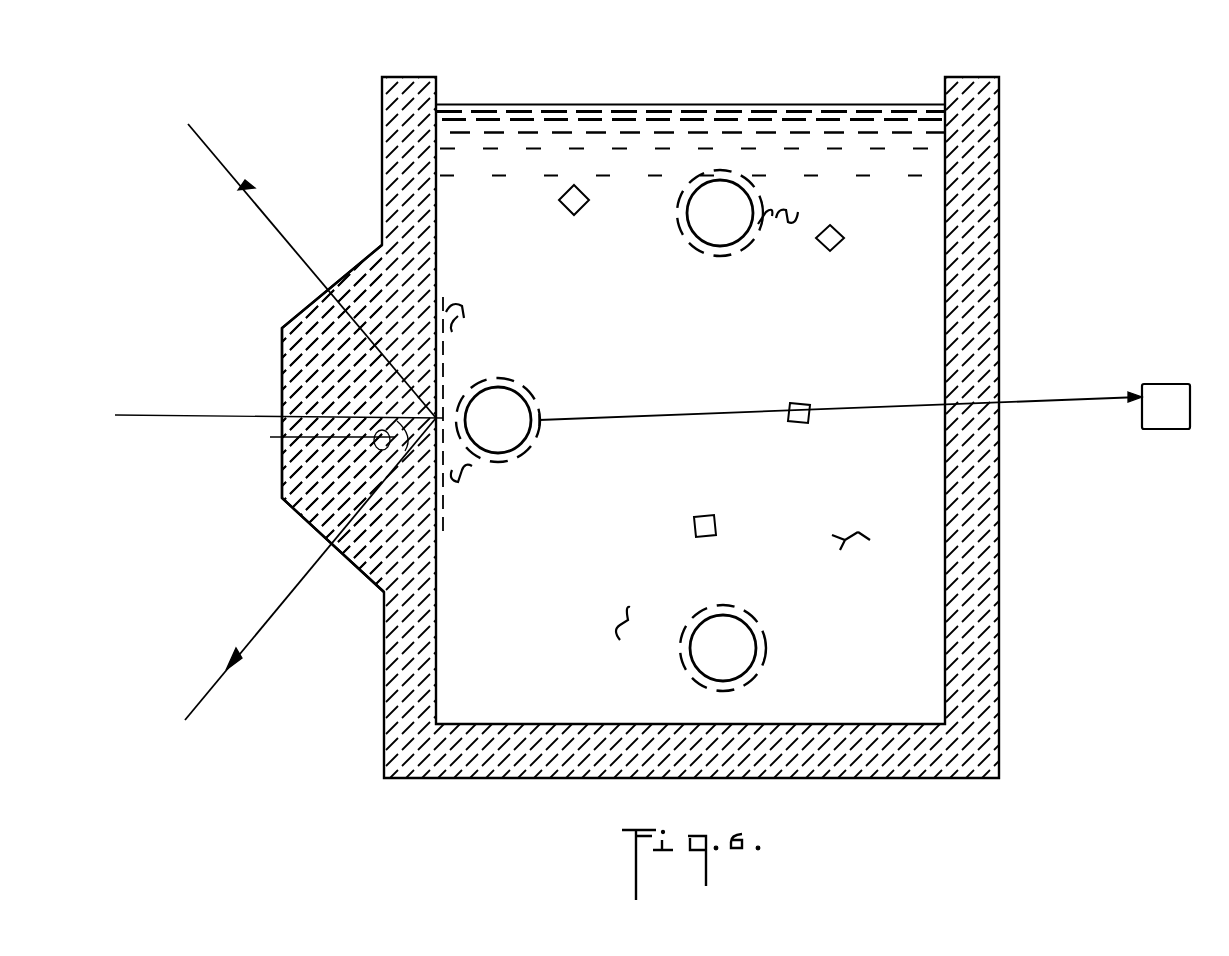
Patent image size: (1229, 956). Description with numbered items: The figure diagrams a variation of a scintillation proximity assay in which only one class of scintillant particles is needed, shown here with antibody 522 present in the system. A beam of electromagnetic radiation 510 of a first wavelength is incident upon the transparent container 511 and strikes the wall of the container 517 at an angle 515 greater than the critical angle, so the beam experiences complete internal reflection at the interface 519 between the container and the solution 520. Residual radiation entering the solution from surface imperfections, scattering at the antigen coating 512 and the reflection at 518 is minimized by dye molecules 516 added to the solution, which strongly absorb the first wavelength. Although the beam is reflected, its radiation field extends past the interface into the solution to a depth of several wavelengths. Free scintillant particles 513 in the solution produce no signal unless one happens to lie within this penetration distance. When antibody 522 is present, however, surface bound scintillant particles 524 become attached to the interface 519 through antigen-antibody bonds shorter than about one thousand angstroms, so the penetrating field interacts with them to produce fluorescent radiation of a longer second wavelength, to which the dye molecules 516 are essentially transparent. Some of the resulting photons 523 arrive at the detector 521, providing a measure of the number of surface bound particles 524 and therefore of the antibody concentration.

The beam of electromagnetic radiation 510 is at (248, 643).
The transparent container 511 is at (1000, 670).
The antigen coating 512 is at (445, 508).
The scintillant particles 513 is at (727, 252).
The angle 515 is at (279, 433).
The dye molecules 516 is at (840, 243).
The wall of the container 517 is at (440, 684).
The reflection 518 is at (302, 306).
The interface 519 is at (440, 367).
The solution 520 is at (880, 122).
The detector 521 is at (1178, 392).
The antibody 522 is at (855, 525).
The photons 523 is at (1062, 398).
The surface bound scintillant particles 524 is at (522, 392).